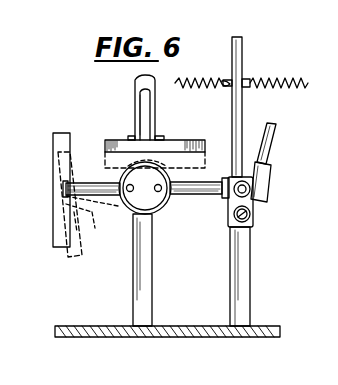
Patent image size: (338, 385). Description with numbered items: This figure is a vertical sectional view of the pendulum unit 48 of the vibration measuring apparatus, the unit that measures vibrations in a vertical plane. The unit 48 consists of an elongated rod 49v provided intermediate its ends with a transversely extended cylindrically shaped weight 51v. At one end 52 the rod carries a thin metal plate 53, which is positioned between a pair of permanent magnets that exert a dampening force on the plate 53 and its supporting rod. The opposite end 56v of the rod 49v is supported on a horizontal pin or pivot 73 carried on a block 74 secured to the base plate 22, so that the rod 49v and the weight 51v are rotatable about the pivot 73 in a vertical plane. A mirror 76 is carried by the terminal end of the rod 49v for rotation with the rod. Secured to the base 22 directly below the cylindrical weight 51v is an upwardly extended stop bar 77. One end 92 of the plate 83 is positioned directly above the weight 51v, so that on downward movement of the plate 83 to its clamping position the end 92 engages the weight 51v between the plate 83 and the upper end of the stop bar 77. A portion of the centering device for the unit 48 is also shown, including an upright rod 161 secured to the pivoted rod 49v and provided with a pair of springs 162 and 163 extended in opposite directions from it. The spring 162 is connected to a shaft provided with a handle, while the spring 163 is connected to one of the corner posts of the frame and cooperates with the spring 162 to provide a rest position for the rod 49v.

The base plate 22 is at (249, 338).
The pendulum unit 48 is at (187, 121).
The rod 49v is at (84, 183).
The cylindrical weight 51v is at (156, 206).
The end of rod 52 is at (64, 186).
The thin metal plate 53 is at (54, 218).
The end of rod 56v is at (213, 194).
The pivot 73 is at (236, 197).
The block 74 is at (251, 251).
The mirror 76 is at (276, 143).
The stop bar 77 is at (133, 295).
The plate 83 is at (119, 140).
The end of plate 92 is at (203, 140).
The upright rod 161 is at (243, 102).
The spring 162 is at (217, 80).
The spring 163 is at (282, 80).